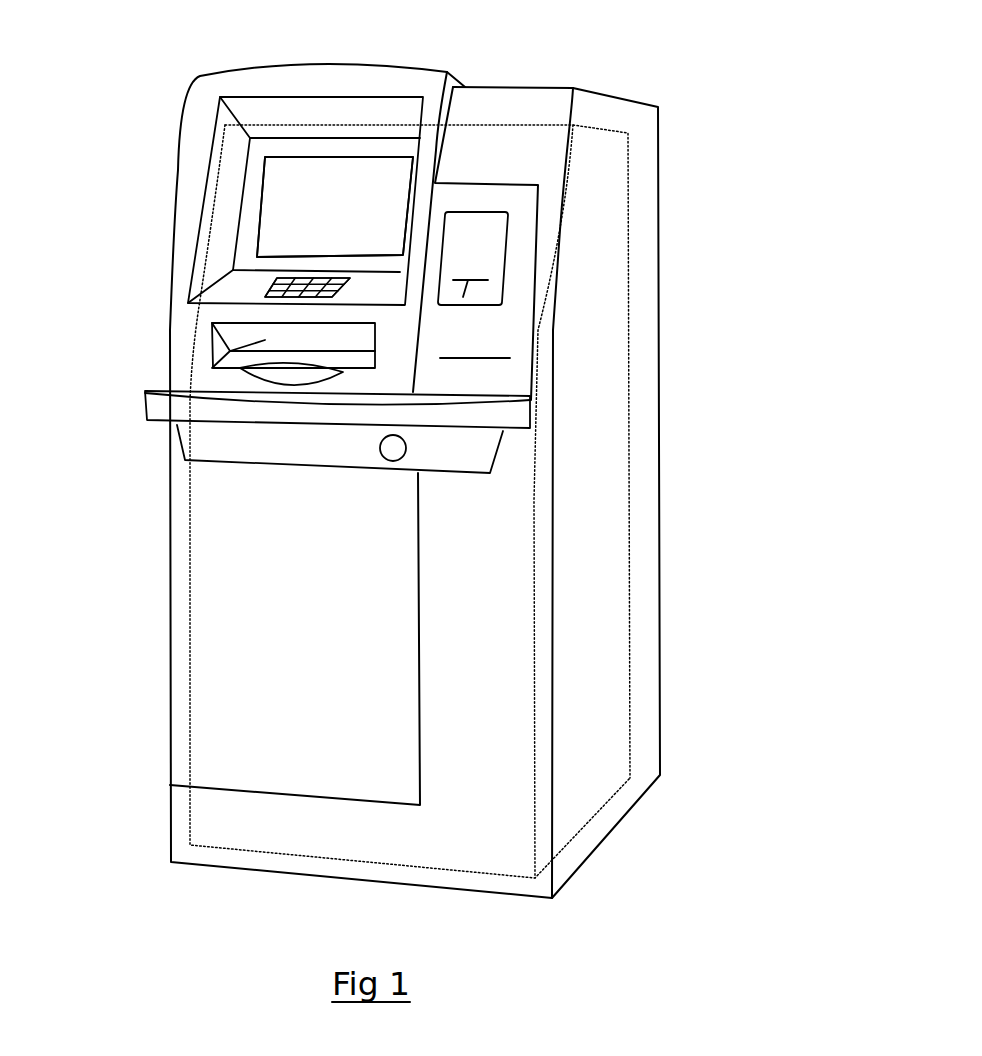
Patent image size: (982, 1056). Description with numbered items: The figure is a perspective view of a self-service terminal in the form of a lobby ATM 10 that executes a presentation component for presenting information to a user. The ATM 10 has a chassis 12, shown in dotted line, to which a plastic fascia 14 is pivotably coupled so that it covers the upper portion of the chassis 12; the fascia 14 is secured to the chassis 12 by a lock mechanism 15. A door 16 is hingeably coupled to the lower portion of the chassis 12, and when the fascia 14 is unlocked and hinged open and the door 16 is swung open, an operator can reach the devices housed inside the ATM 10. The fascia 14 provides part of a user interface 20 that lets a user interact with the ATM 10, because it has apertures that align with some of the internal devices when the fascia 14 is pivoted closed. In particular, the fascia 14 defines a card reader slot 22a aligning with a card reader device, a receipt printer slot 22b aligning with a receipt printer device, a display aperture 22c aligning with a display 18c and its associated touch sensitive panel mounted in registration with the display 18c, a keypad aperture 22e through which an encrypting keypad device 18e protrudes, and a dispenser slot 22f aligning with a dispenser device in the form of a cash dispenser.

The lobby ATM 10 is at (750, 514).
The chassis 12 is at (413, 492).
The fascia 14 is at (425, 72).
The lock mechanism 15 is at (388, 448).
The door 16 is at (178, 690).
The display 18c is at (373, 180).
The encrypting keypad device 18e is at (310, 243).
The user interface 20 is at (142, 258).
The card reader slot 22a is at (469, 282).
The receipt printer slot 22b is at (497, 352).
The display aperture 22c is at (323, 153).
The keypad aperture 22e is at (275, 282).
The dispenser slot 22f is at (232, 350).